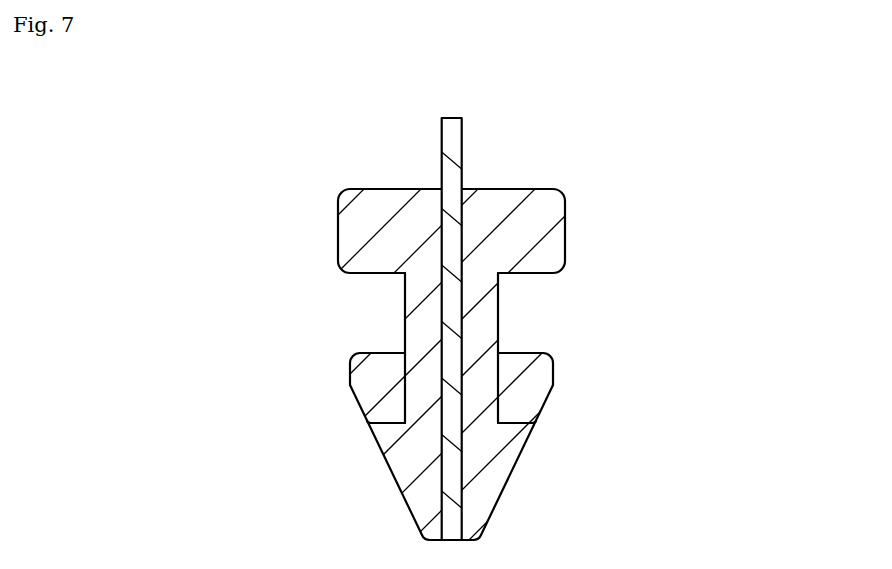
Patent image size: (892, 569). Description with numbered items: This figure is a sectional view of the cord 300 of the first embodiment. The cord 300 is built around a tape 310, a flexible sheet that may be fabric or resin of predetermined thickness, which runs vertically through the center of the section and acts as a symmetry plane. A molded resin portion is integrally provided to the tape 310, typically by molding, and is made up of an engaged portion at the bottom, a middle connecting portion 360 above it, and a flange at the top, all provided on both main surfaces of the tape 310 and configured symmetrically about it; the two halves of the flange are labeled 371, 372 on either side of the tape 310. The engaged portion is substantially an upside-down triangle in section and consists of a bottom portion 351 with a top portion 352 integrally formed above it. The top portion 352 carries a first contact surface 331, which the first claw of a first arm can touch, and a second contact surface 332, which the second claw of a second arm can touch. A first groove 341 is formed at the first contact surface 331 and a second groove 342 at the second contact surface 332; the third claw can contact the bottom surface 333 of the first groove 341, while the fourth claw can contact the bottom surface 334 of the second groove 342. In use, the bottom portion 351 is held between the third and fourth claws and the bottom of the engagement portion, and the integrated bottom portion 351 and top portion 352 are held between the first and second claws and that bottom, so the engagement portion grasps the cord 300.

The cord 300 is at (170, 119).
The tape 310 is at (458, 137).
The first contact surface 331 is at (371, 352).
The second contact surface 332 is at (523, 352).
The bottom surface of the first groove 333 is at (390, 423).
The bottom surface of the second groove 334 is at (527, 425).
The first groove 341 is at (357, 377).
The second groove 342 is at (548, 376).
The bottom portion 351 is at (492, 478).
The top portion 352 is at (355, 395).
The middle connecting portion 360 is at (483, 308).
The first head part 371 is at (346, 197).
The second head part 372 is at (554, 201).